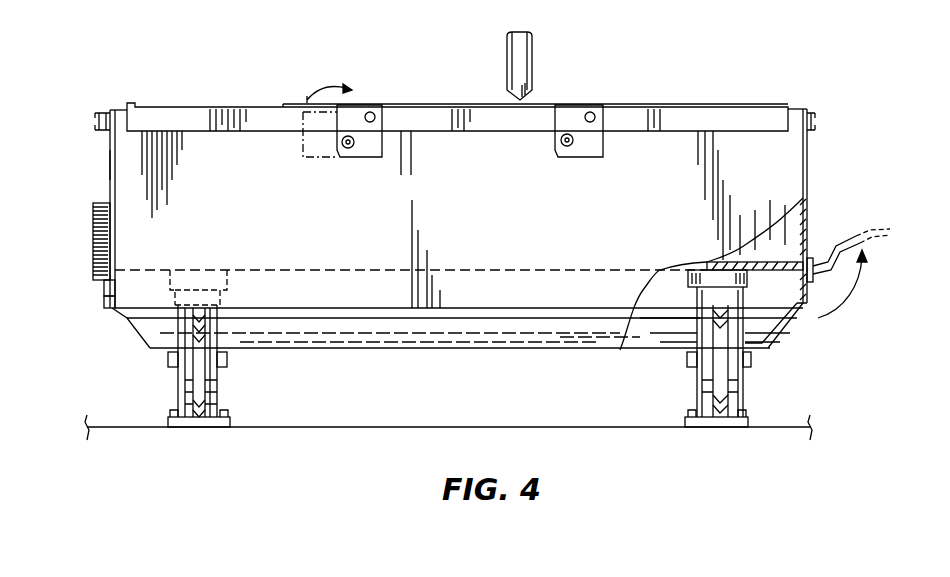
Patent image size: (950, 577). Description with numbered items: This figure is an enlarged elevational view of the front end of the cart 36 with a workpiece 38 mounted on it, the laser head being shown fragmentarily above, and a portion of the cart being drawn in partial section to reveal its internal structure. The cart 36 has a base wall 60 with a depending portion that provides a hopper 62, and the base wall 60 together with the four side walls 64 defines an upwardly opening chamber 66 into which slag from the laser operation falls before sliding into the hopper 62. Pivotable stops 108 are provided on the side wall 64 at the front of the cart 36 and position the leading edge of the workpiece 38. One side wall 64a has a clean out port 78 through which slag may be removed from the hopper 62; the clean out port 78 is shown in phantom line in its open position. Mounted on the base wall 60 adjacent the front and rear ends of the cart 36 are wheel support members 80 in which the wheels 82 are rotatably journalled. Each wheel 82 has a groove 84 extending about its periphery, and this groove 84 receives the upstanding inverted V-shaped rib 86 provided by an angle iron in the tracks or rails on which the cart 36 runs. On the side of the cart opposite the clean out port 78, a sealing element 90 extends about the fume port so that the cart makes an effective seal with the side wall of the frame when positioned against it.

The cart 36 is at (110, 166).
The workpiece 38 is at (730, 101).
The pivotable stops 108 is at (350, 130).
The sealing element 90 is at (94, 234).
The side walls 64 is at (474, 233).
The side wall 64a is at (805, 262).
The chamber 66 is at (812, 207).
The clean out port 78 is at (799, 312).
The wheel support members 80 is at (176, 323).
The wheels 82 is at (216, 397).
The groove 84 is at (188, 388).
The inverted V-shaped rib 86 is at (198, 430).
The hopper 62 is at (630, 352).
The base wall 60 is at (765, 348).